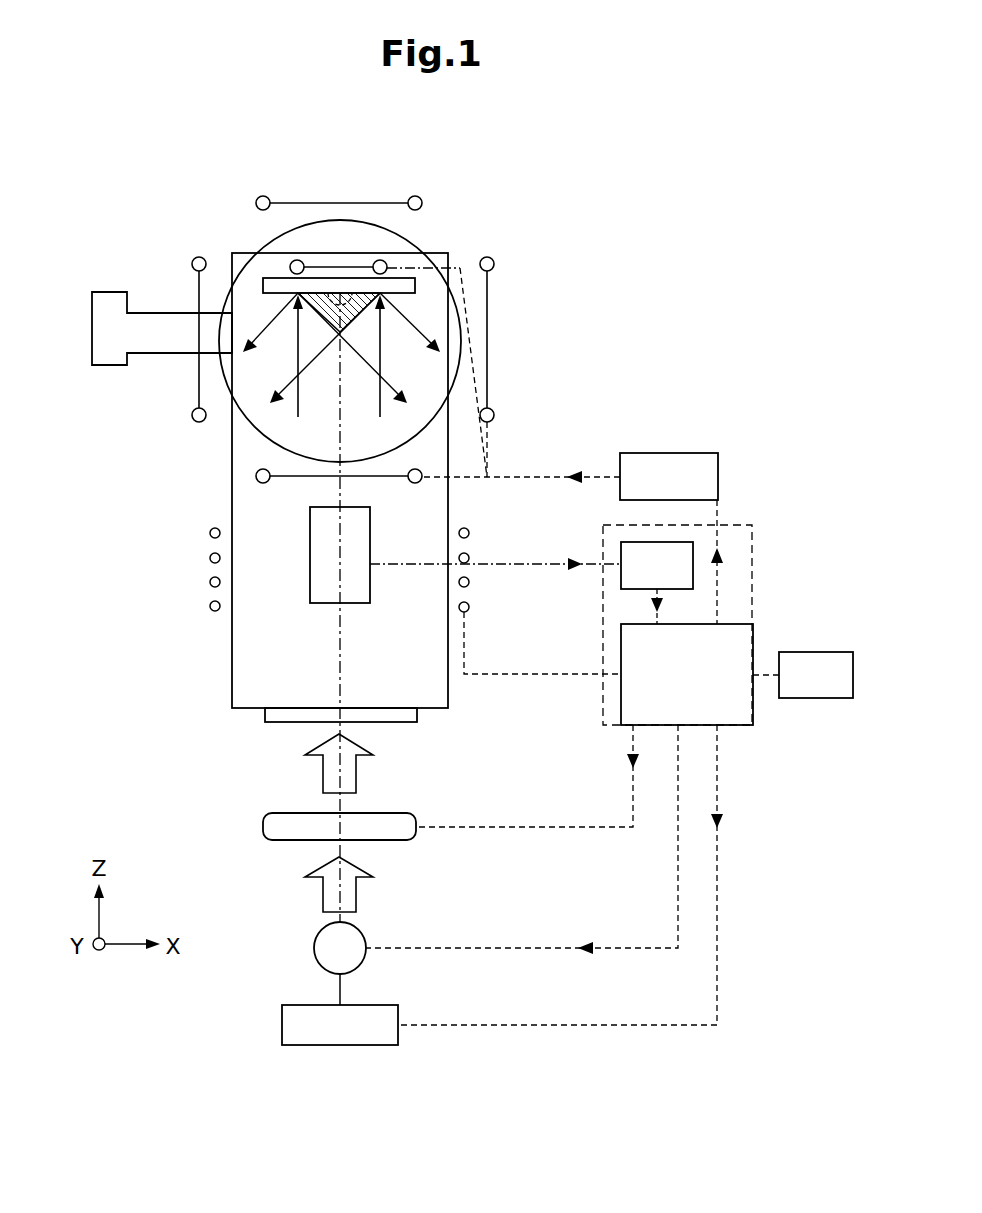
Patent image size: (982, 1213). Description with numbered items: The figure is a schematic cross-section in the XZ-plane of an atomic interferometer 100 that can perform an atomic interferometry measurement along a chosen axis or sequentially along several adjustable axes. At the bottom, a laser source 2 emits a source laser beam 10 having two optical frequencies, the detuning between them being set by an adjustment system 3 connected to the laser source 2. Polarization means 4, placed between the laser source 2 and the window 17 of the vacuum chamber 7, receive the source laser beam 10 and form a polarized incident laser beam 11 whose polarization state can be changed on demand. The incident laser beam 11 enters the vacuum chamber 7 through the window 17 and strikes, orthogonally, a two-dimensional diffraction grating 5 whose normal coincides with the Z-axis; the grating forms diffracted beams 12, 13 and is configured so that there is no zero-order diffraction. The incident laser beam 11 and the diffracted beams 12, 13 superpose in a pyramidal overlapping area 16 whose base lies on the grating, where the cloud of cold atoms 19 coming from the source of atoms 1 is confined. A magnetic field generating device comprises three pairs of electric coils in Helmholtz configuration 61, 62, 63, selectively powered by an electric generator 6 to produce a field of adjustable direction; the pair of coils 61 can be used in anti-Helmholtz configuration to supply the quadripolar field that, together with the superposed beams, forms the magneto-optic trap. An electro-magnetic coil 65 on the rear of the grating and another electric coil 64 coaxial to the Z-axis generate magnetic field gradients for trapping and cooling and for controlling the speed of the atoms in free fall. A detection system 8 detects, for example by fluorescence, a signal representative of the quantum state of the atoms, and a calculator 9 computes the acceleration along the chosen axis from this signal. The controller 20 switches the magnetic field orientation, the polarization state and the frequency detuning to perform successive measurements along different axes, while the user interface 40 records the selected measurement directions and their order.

The atomic interferometer 100 is at (112, 487).
The source of atoms 1 is at (92, 333).
The laser source 2 is at (314, 942).
The adjustment system 3 is at (282, 1018).
The polarization means 4 is at (263, 827).
The two-dimensional diffraction grating 5 is at (412, 284).
The electric generator 6 is at (572, 446).
The vacuum chamber 7 is at (232, 660).
The detection system 8 is at (465, 555).
The calculator 9 is at (657, 583).
The source laser beam 10 is at (323, 885).
The incident laser beam 11 is at (300, 393).
The diffracted beam 12 is at (408, 403).
The diffracted beam 13 is at (246, 351).
The overlapping area 16 is at (358, 300).
The window 17 is at (265, 715).
The cloud of cold atoms 19 is at (336, 306).
The controller 20 is at (559, 775).
The user interface 40 is at (803, 675).
The pair of electric coils in Helmholtz configuration 61 is at (263, 196).
The pair of electric coils in Helmholtz configuration 62 is at (193, 263).
The pair of electric coils in Helmholtz configuration 63 is at (262, 249).
The electric coil 64 is at (210, 533).
The electro-magnetic coil 65 is at (387, 265).